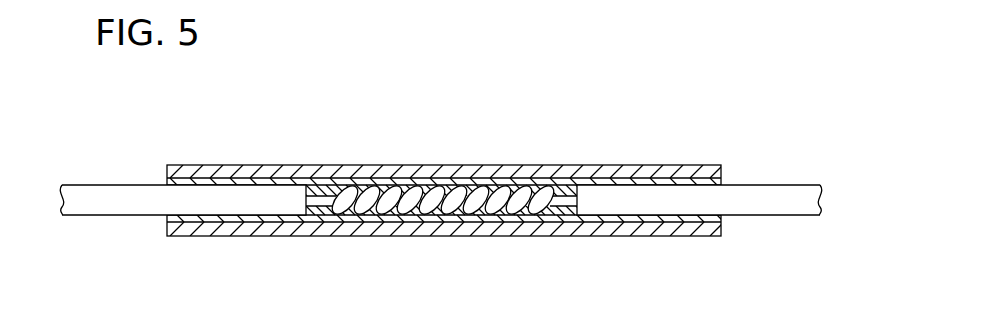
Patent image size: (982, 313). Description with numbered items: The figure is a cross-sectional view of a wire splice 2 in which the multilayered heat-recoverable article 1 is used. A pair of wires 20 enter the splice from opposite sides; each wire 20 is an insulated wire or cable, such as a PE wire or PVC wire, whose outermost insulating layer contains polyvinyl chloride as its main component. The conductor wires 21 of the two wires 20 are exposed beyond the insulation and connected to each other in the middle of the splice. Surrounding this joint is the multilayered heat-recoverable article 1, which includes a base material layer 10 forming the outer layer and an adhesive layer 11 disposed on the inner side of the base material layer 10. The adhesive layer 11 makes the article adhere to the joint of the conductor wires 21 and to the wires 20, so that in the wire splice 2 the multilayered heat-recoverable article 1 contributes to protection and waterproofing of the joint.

The multilayered heat-recoverable article 1 is at (447, 181).
The wire splice 2 is at (542, 151).
The base material layer 10 is at (409, 170).
The adhesive layer 11 is at (328, 183).
The wire 20 is at (108, 192).
The conductor wire 21 is at (328, 201).